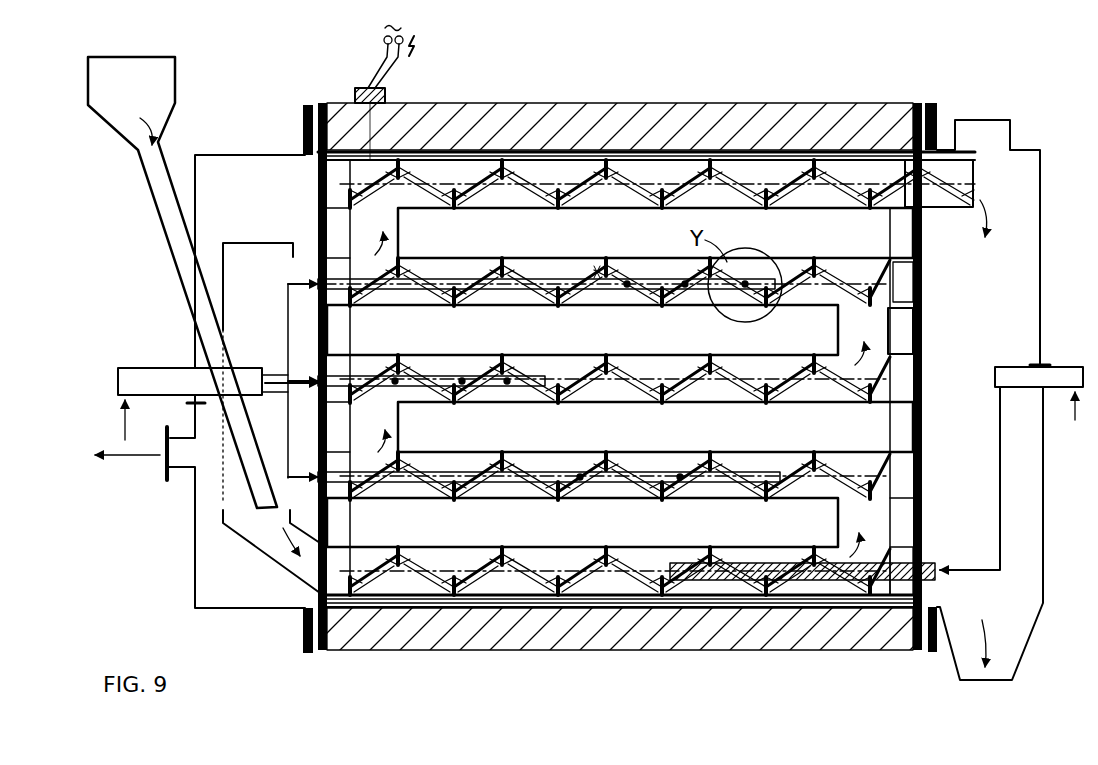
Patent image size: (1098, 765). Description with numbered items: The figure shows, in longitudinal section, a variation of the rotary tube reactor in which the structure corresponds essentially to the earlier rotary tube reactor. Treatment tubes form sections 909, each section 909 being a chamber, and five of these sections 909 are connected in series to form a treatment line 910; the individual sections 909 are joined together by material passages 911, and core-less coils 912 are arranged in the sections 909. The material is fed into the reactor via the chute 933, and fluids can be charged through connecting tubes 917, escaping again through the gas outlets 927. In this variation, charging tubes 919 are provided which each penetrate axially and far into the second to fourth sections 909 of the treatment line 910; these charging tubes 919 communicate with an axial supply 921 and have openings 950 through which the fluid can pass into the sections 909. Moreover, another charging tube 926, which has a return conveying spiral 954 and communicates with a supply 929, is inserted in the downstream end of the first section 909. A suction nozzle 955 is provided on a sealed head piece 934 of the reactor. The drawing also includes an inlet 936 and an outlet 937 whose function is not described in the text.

The section 909 is at (480, 362).
The treatment line 910 is at (645, 302).
The material passage 911 is at (870, 318).
The core-less coil 912 is at (427, 272).
The connecting tube 917 is at (285, 308).
The charging tube 919 is at (535, 462).
The axial supply 921 is at (155, 366).
The charging tube 926 is at (890, 588).
The gas outlet 927 is at (895, 281).
The supply 929 is at (1042, 368).
The chute 933 is at (165, 210).
The sealed head piece 934 is at (205, 560).
The gas inlet 936 is at (993, 130).
The discharge outlet 937 is at (963, 653).
The opening 950 is at (583, 283).
The return conveying spiral 954 is at (807, 573).
The suction nozzle 955 is at (178, 462).